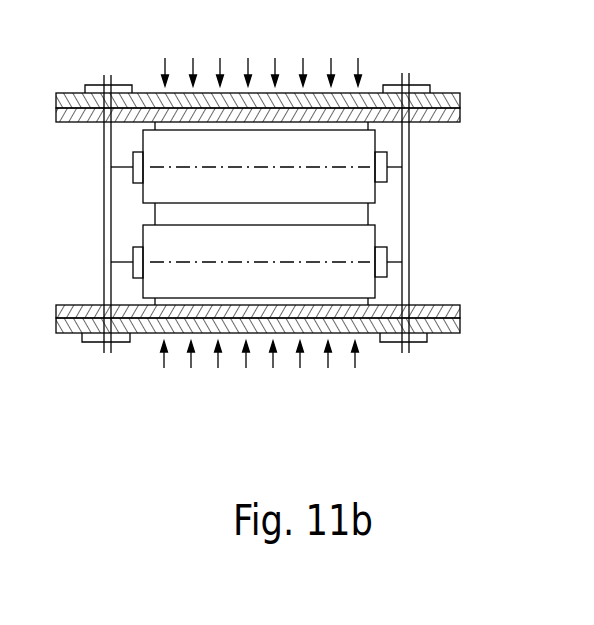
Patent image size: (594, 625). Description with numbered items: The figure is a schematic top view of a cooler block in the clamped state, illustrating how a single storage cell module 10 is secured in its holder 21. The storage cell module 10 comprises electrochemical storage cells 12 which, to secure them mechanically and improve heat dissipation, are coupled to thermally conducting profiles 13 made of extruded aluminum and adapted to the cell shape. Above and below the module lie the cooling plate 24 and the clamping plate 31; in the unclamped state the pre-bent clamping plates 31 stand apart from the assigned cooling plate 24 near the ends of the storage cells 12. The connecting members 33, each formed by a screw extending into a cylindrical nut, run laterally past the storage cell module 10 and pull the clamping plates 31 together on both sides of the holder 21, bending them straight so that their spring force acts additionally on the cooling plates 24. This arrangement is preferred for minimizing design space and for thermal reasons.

The storage cell module 10 is at (297, 187).
The storage cell 12 is at (301, 213).
The thermally conducting profile 13 is at (370, 128).
The holder 21 is at (293, 179).
The cooling plate 24 is at (372, 93).
The clamping plate 31 is at (272, 169).
The connecting member 33 is at (103, 138).